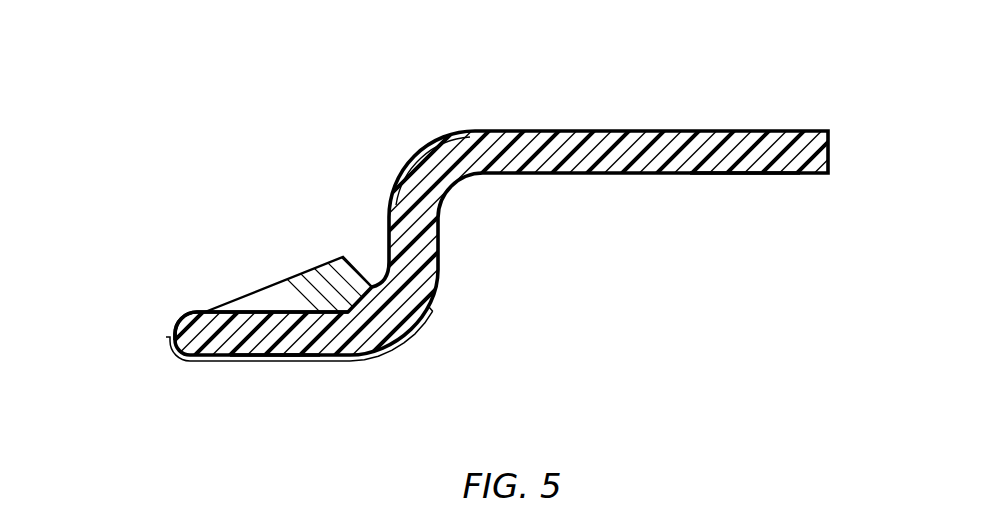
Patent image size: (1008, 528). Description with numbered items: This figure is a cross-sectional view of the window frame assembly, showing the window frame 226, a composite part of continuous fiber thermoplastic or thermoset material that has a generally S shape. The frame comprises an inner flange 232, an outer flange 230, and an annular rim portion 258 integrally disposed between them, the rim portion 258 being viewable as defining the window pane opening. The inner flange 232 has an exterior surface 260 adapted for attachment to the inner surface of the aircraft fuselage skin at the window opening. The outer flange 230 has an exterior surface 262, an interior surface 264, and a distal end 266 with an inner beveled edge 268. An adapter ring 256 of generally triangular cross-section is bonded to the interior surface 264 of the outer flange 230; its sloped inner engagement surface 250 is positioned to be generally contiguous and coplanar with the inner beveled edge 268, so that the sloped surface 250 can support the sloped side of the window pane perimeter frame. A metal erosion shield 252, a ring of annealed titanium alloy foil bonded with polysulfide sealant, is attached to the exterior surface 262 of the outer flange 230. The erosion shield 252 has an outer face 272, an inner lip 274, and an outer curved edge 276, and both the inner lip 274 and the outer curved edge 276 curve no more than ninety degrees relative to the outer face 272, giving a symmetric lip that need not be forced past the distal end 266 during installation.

The window frame 226 is at (366, 154).
The inner flange 232 is at (697, 150).
The annular rim portion 258 is at (420, 243).
The exterior surface 260 is at (743, 184).
The sloped inner engagement surface 250 is at (350, 311).
The adapter ring 256 is at (288, 293).
The inner beveled edge 268 is at (192, 316).
The distal end 266 is at (146, 331).
The inner lip 274 is at (168, 345).
The erosion shield 252 is at (222, 362).
The exterior surface 262 is at (262, 371).
The outer flange 230 is at (293, 358).
The outer face 272 is at (336, 373).
The interior surface 264 is at (368, 357).
The outer curved edge 276 is at (409, 333).